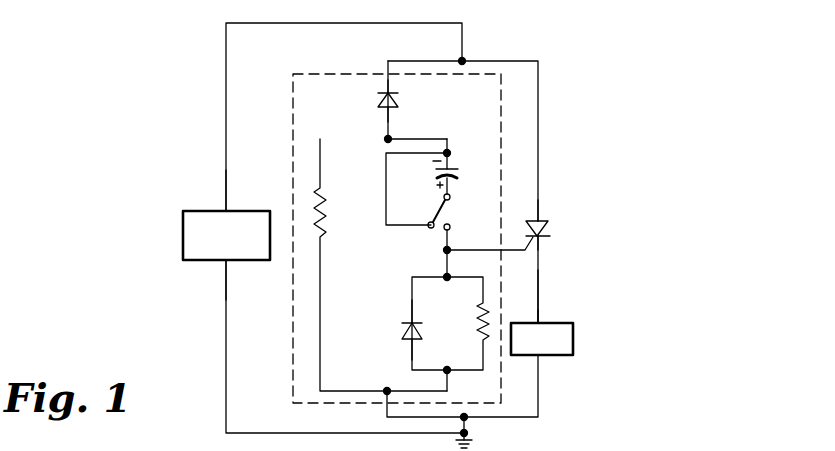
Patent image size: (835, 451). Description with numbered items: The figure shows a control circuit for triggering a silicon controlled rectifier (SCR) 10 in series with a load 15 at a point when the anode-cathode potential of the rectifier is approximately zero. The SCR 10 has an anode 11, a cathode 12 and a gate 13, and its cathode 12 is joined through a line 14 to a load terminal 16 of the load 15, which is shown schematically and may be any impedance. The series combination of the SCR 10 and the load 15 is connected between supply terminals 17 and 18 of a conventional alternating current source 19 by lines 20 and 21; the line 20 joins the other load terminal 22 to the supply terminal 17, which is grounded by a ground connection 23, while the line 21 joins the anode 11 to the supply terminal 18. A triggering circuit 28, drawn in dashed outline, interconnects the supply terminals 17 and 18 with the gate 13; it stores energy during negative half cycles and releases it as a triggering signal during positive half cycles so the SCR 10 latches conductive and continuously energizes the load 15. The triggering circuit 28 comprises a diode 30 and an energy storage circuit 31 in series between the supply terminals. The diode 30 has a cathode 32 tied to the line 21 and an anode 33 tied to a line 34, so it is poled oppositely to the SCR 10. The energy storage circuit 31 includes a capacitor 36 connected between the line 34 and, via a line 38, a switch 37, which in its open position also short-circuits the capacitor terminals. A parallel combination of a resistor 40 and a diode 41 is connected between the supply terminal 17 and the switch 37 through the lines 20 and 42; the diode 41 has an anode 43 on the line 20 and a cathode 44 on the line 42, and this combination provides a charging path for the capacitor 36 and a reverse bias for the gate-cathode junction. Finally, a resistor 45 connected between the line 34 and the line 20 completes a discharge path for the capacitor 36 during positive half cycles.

The silicon controlled rectifier 10 is at (556, 228).
The anode 11 is at (546, 221).
The cathode 12 is at (550, 238).
The gate 13 is at (530, 252).
The line 14 is at (541, 290).
The load 15 is at (574, 326).
The load terminal 16 is at (542, 321).
The supply terminal 17 is at (222, 262).
The supply terminal 18 is at (234, 211).
The alternating current source 19 is at (183, 241).
The line 20 is at (232, 358).
The line 21 is at (455, 23).
The load terminal 22 is at (541, 358).
The ground connection 23 is at (470, 440).
The triggering circuit 28 is at (506, 107).
The diode 30 is at (408, 100).
The energy storage circuit 31 is at (457, 130).
The cathode 32 is at (383, 93).
The anode 33 is at (386, 108).
The line 34 is at (392, 128).
The capacitor 36 is at (416, 189).
The switch 37 is at (440, 206).
The line 38 is at (456, 188).
The resistor 40 is at (480, 313).
The diode 41 is at (394, 334).
The line 42 is at (444, 263).
The anode 43 is at (408, 342).
The cathode 44 is at (408, 320).
The resistor 45 is at (327, 215).